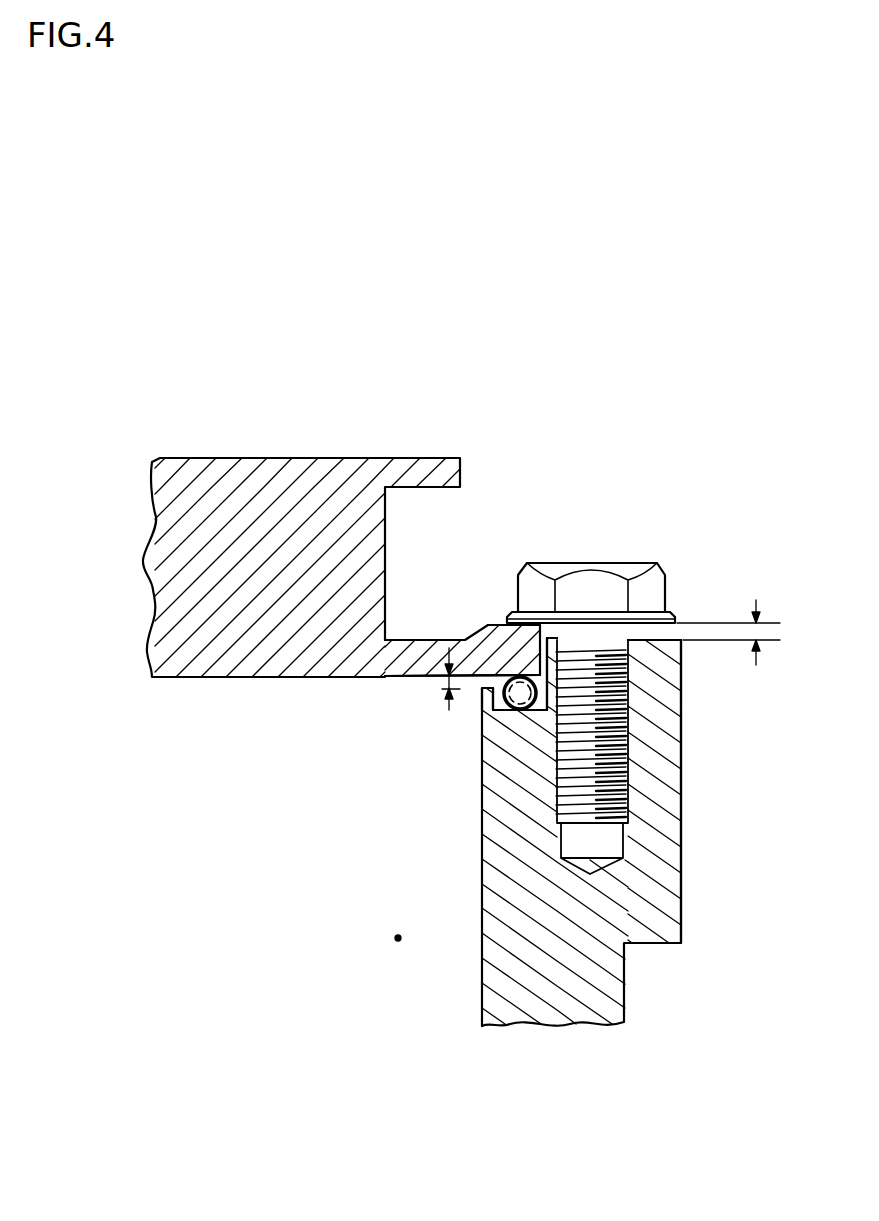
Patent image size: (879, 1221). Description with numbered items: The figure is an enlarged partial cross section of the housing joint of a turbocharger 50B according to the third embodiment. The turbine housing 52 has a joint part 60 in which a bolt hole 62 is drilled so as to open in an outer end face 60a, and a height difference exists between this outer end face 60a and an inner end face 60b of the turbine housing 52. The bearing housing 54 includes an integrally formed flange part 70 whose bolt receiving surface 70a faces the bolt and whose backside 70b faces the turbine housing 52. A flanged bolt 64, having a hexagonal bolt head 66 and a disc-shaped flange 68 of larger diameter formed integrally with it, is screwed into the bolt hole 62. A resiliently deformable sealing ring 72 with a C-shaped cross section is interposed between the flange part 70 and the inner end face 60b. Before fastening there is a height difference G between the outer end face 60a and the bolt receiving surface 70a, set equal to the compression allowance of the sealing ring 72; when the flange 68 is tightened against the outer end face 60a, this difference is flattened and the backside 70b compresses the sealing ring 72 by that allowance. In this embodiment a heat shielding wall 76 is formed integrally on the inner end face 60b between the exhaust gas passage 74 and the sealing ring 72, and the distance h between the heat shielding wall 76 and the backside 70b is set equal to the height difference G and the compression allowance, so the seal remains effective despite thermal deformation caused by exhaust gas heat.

The turbocharger 50B is at (467, 423).
The turbine housing 52 is at (685, 919).
The bearing housing 54 is at (233, 457).
The joint part 60 is at (682, 720).
The outer end face 60a is at (645, 641).
The inner end face 60b is at (495, 703).
The bolt hole 62 is at (615, 873).
The flanged bolt 64 is at (619, 657).
The bolt head 66 is at (553, 563).
The flange 68 is at (678, 617).
The flange part 70 is at (422, 639).
The bolt receiving surface 70a is at (493, 624).
The backside 70b is at (410, 677).
The sealing ring 72 is at (508, 709).
The exhaust gas passage 74 is at (398, 941).
The heat shielding wall 76 is at (482, 696).